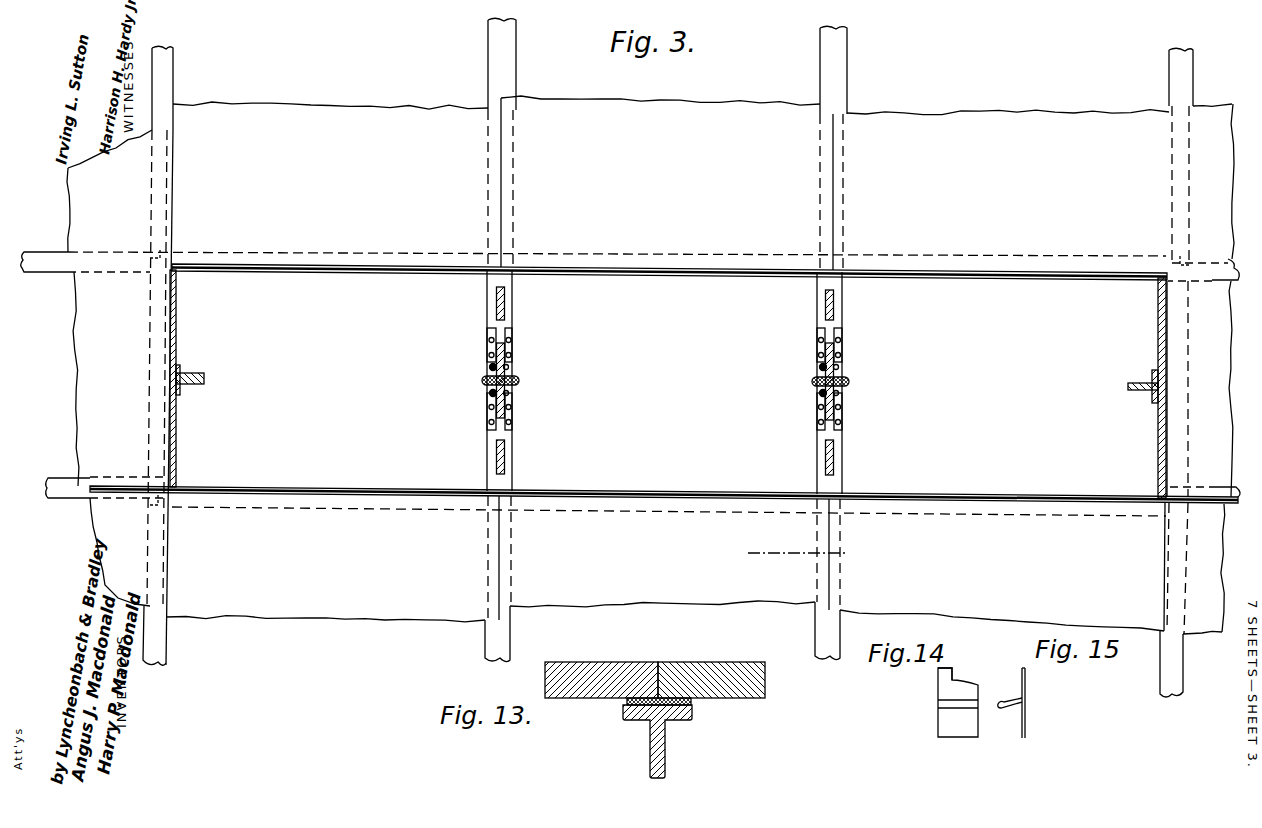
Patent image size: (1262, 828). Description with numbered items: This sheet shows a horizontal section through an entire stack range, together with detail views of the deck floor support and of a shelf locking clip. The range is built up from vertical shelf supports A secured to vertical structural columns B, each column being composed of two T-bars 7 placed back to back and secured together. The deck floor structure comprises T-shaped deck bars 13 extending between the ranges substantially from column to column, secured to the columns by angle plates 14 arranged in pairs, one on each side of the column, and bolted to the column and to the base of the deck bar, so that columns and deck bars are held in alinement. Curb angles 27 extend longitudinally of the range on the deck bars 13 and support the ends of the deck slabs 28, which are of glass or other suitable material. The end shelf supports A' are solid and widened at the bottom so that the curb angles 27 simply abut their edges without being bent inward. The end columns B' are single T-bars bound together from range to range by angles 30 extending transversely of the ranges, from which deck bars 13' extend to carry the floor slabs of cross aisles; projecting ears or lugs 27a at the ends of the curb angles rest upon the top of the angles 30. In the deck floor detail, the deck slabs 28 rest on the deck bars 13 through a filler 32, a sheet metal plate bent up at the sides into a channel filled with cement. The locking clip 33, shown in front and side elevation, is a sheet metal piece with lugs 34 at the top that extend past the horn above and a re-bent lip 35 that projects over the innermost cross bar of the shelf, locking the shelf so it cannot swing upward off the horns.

In FIG. 3, the T-bars 7 is at (508, 367).
In FIG. 3, the deck bars 13 is at (668, 357).
In FIG. 13, the deck bars 13 is at (670, 741).
In FIG. 3, the deck bars 13' is at (43, 403).
In FIG. 3, the angle plates 14 is at (488, 343).
In FIG. 3, the curb angles 27 is at (356, 267).
In FIG. 3, the projecting ears or lugs 27a is at (160, 250).
In FIG. 3, the deck slabs 28 is at (650, 365).
In FIG. 13, the deck slabs 28 is at (598, 662).
In FIG. 3, the angles 30 is at (155, 641).
In FIG. 13, the filler 32 is at (692, 702).
In FIG. 14, the locking clip 33 is at (938, 717).
In FIG. 15, the locking clip 33 is at (1026, 736).
In FIG. 14, the lugs 34 is at (946, 668).
In FIG. 15, the lugs 34 is at (1026, 673).
In FIG. 14, the lip 35 is at (938, 704).
In FIG. 15, the lip 35 is at (1002, 703).
In FIG. 3, the shelf supports A is at (688, 379).
In FIG. 3, the end shelf supports A' is at (668, 384).
In FIG. 3, the columns B is at (665, 381).
In FIG. 3, the end columns B' is at (667, 382).